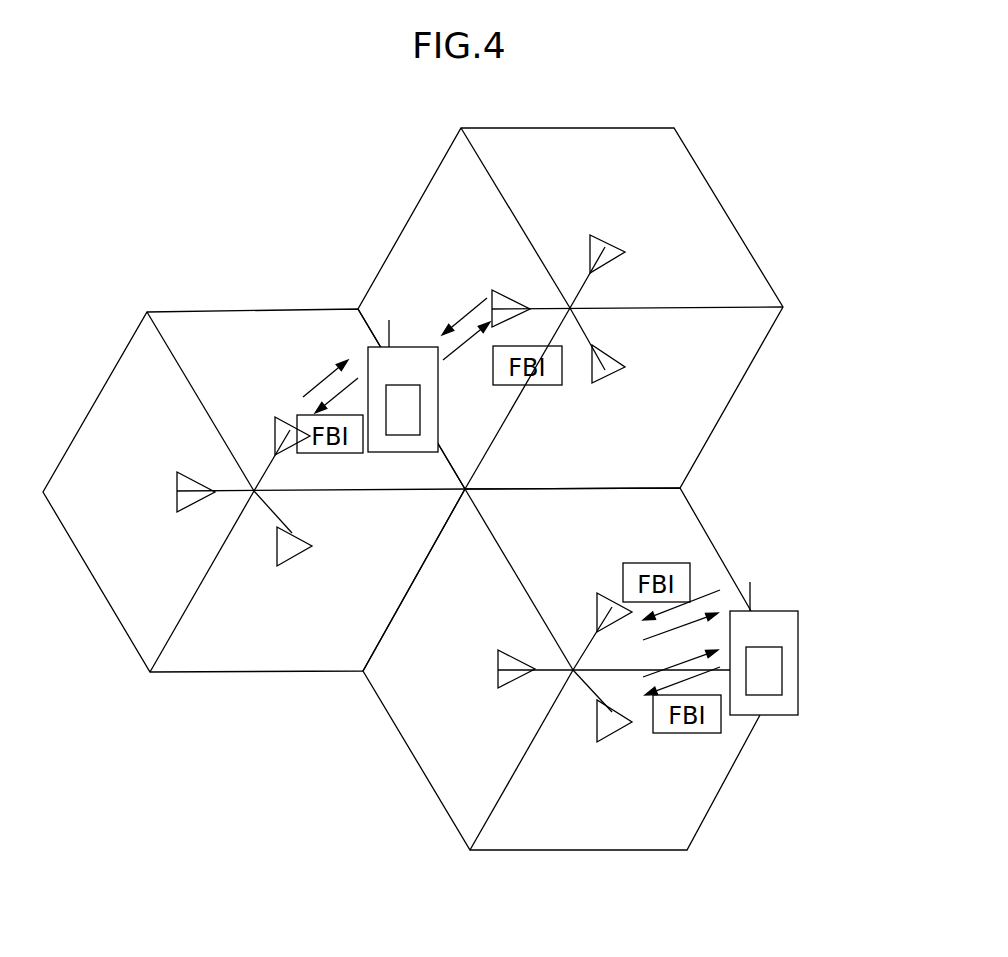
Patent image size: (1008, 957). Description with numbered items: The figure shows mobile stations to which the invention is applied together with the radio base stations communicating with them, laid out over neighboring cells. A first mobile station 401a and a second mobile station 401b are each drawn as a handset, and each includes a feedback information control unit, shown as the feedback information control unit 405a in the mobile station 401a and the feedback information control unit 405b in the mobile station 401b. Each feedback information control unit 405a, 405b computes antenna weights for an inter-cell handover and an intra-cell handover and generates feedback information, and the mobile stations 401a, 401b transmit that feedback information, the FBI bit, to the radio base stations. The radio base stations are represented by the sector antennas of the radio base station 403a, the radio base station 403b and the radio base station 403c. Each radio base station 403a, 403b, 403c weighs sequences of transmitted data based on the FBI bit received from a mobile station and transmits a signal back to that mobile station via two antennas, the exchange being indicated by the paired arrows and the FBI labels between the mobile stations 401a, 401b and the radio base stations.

The mobile station 401a is at (798, 625).
The mobile station 401b is at (432, 347).
The radio base station 403a is at (627, 735).
The radio base station 403b is at (618, 237).
The radio base station 403c is at (305, 557).
The feedback information control unit 405a is at (782, 673).
The feedback information control unit 405b is at (417, 415).